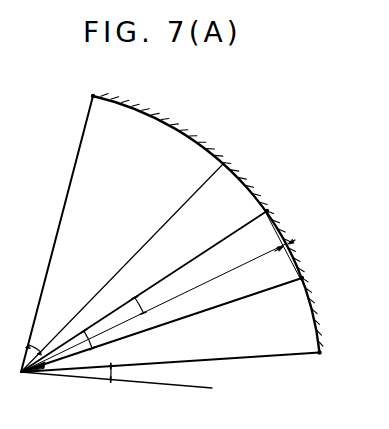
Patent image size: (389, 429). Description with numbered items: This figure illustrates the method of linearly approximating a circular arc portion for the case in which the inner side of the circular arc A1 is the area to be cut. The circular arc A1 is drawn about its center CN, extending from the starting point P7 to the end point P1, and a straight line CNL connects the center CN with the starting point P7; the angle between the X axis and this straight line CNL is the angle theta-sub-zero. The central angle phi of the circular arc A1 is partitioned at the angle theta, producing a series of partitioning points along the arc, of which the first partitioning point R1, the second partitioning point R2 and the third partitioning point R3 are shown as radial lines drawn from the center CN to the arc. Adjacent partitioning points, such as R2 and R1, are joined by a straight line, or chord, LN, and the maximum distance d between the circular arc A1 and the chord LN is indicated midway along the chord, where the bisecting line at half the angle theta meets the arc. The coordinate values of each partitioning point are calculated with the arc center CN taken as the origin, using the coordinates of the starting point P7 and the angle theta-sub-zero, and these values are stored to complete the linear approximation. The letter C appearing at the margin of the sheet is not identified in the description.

The end point of circular arc P1 is at (62, 227).
The circular arc A1 is at (152, 112).
The third partitioning point R3 is at (136, 259).
The second partitioning point R2 is at (157, 285).
The straight line (chord) LN is at (276, 231).
The maximum distance d is at (292, 245).
The first partitioning point R1 is at (172, 319).
The starting point of circular arc P7 is at (332, 356).
The center of circular arc CN is at (28, 381).
The straight line connecting center and starting point CNL is at (223, 361).
The marginal label C is at (382, 409).